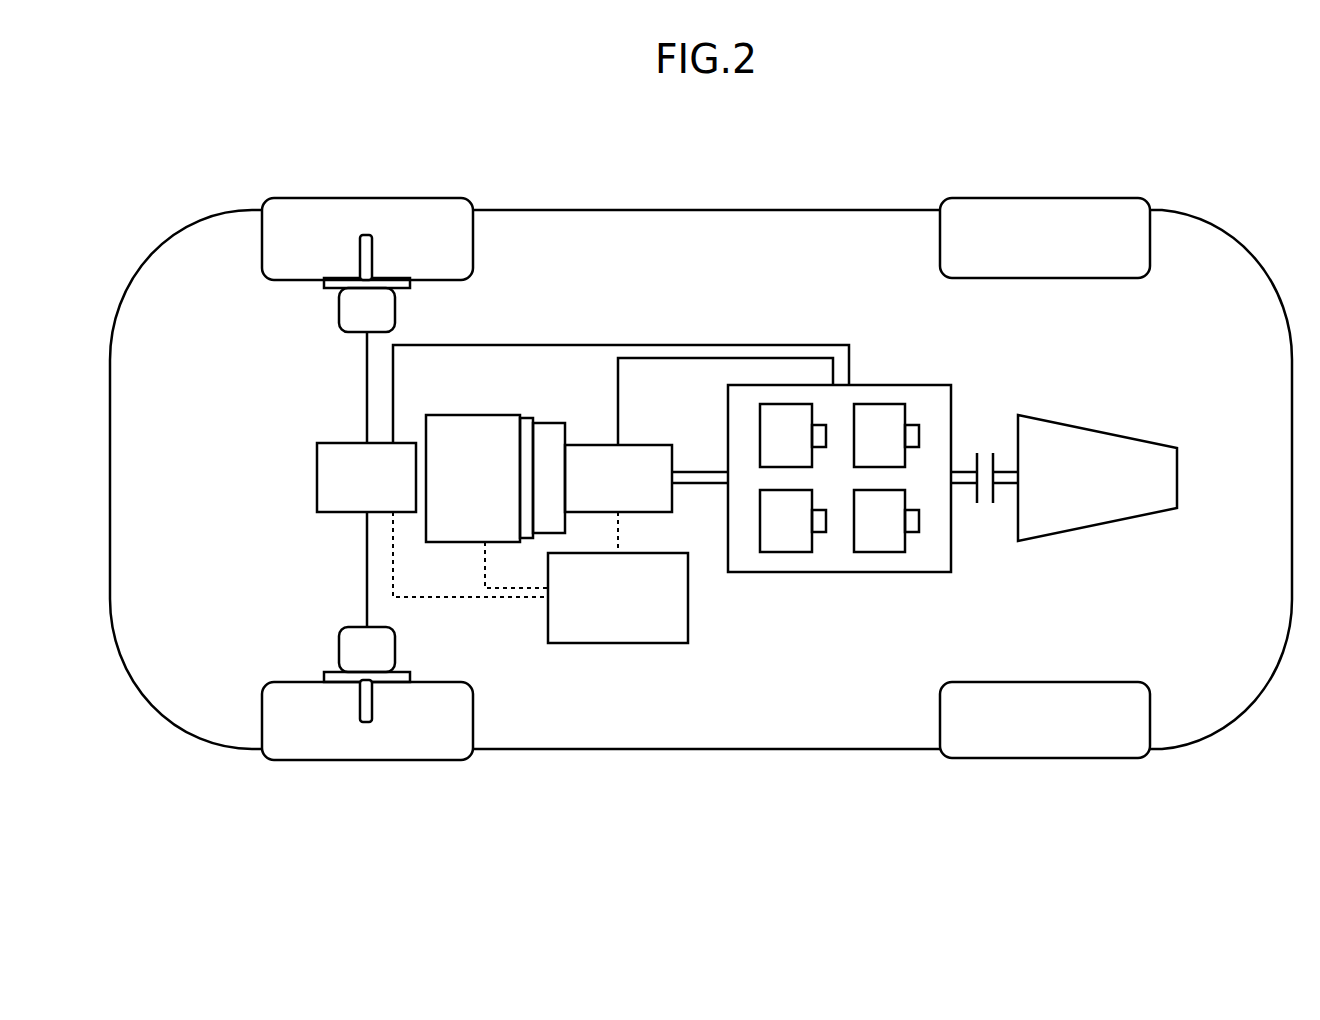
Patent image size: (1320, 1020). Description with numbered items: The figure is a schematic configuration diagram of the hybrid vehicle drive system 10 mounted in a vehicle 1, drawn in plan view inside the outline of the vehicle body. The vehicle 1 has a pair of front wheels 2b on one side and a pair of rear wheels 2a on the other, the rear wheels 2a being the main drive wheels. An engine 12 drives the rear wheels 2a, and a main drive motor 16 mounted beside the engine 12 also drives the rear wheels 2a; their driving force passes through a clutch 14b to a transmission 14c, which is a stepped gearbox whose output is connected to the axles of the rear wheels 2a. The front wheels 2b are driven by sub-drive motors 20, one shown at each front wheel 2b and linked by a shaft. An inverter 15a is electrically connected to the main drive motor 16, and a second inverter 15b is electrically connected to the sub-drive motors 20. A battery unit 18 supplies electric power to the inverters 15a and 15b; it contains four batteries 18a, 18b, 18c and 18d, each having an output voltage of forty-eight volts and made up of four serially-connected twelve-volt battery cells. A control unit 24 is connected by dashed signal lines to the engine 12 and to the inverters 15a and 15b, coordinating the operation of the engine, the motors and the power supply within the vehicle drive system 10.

The vehicle 1 is at (378, 128).
The rear wheels 2a is at (1055, 197).
The front wheels 2b is at (310, 197).
The vehicle drive system 10 is at (659, 333).
The engine 12 is at (479, 415).
The clutch 14b is at (995, 503).
The transmission 14c is at (1083, 434).
The inverter 15a is at (655, 445).
The inverter 15b is at (317, 472).
The main drive motor 16 is at (550, 423).
The battery unit 18 is at (897, 385).
The battery 18a is at (905, 417).
The battery 18b is at (887, 552).
The battery 18c is at (758, 432).
The battery 18d is at (793, 552).
The sub-drive motors 20 is at (339, 305).
The control unit 24 is at (645, 645).